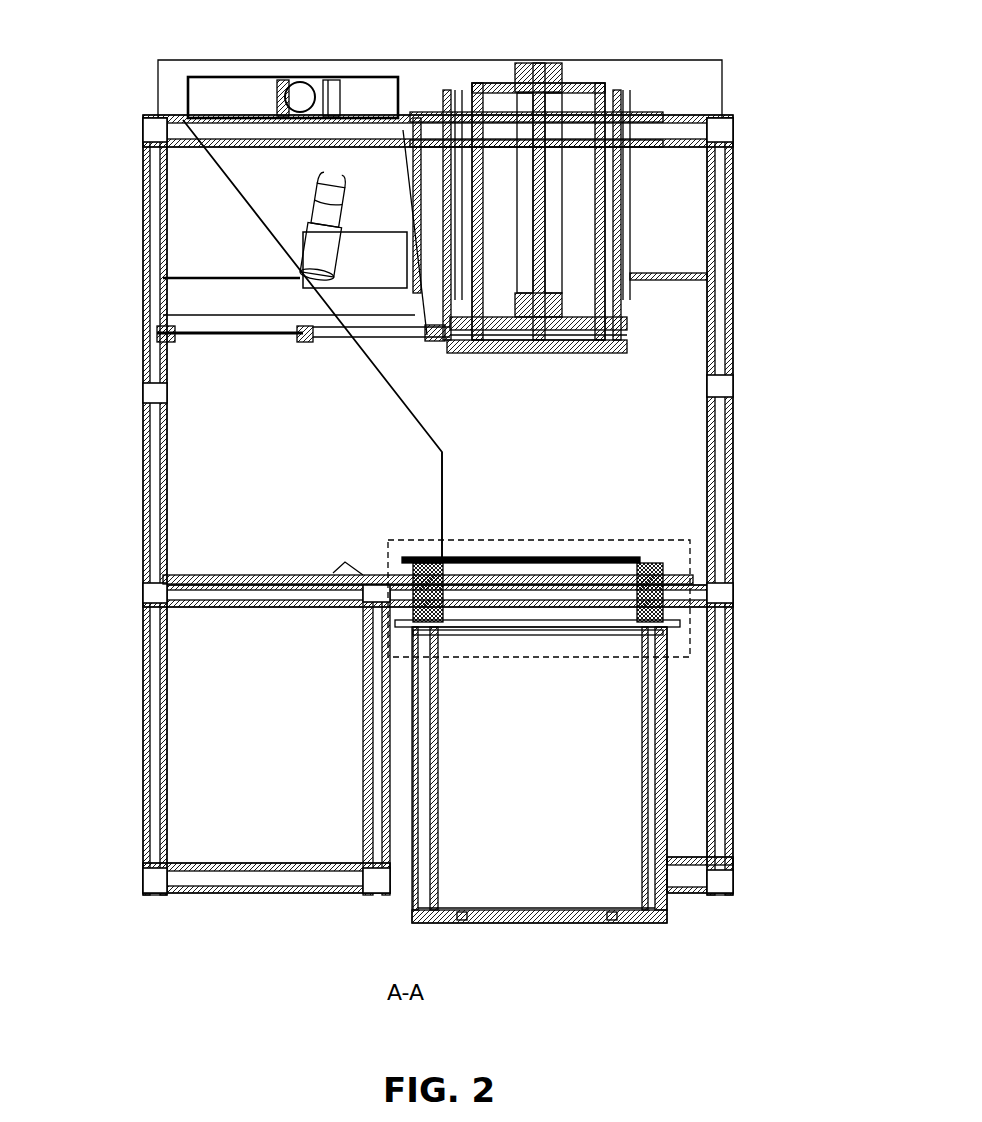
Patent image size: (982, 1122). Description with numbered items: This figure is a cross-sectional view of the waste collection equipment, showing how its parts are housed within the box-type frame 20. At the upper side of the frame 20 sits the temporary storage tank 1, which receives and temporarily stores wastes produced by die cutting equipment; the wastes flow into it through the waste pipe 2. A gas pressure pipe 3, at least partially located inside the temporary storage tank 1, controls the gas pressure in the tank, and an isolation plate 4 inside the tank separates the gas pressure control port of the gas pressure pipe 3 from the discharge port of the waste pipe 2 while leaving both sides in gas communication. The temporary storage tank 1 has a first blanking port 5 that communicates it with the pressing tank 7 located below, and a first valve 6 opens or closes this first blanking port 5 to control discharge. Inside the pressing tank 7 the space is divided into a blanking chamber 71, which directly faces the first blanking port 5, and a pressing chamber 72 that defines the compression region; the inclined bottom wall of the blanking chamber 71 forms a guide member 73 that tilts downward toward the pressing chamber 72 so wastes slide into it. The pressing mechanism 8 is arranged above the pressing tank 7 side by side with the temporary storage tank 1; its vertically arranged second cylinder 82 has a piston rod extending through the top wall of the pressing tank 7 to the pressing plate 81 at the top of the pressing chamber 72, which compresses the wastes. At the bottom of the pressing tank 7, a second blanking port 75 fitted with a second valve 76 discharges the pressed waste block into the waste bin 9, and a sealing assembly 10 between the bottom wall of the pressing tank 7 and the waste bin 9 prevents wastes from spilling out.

The temporary storage tank 1 is at (270, 190).
The waste pipe 2 is at (323, 240).
The gas pressure pipe 3 is at (298, 92).
The isolation plate 4 is at (225, 108).
The first blanking port 5 is at (345, 296).
The first valve 6 is at (273, 340).
The pressing tank 7 is at (597, 478).
The blanking chamber 71 is at (393, 385).
The pressing chamber 72 is at (483, 527).
The guide member 73 is at (397, 430).
The second blanking port 75 is at (550, 557).
The second valve 76 is at (335, 562).
The pressing mechanism 8 is at (650, 425).
The pressing plate 81 is at (570, 355).
The second cylinder 82 is at (553, 238).
The waste bin 9 is at (463, 748).
The sealing assembly 10 is at (657, 620).
The frame 20 is at (727, 170).